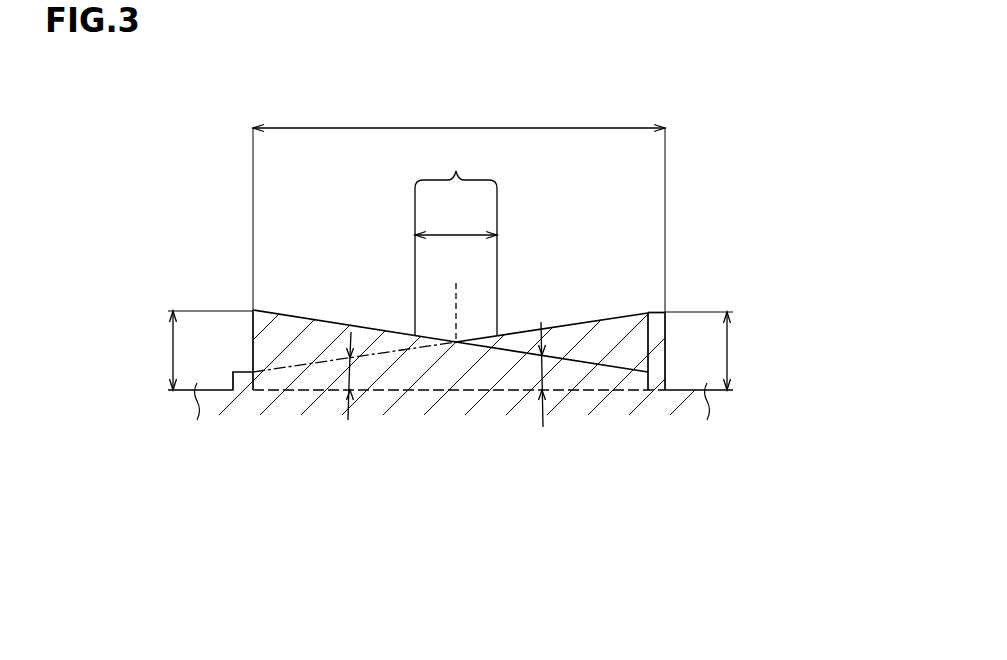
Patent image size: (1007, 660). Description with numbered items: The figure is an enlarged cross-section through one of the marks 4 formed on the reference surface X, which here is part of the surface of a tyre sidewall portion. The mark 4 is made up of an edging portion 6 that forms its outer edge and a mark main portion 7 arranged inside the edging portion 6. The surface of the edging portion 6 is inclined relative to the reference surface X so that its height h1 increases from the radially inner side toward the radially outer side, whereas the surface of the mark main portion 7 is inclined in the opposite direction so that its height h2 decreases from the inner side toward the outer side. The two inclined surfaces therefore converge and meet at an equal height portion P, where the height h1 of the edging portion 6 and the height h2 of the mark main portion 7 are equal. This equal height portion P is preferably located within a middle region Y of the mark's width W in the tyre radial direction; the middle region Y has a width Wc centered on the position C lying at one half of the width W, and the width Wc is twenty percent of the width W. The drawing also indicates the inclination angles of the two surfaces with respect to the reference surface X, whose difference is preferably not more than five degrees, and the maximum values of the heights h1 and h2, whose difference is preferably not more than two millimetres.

The mark 4 is at (692, 241).
The edging portion 6 is at (654, 311).
The mark main portion 7 is at (578, 362).
The width W is at (459, 202).
The width of middle region Wc is at (456, 219).
The middle region Y is at (456, 236).
The center position C is at (456, 296).
The equal height portion P is at (451, 338).
The reference surface X is at (683, 391).
The height of edging portion surface h1 is at (771, 351).
The height of mark main portion surface h2 is at (137, 350).